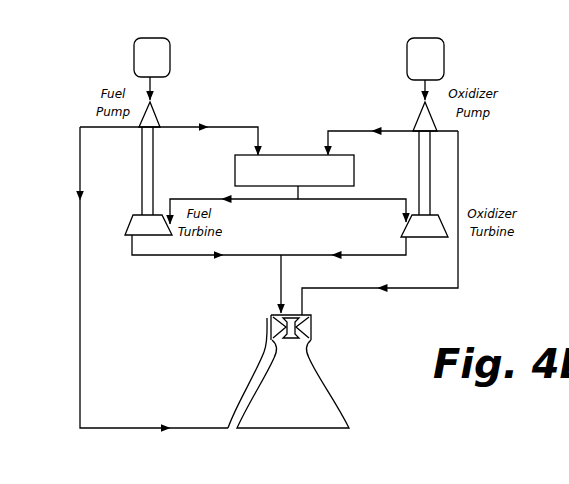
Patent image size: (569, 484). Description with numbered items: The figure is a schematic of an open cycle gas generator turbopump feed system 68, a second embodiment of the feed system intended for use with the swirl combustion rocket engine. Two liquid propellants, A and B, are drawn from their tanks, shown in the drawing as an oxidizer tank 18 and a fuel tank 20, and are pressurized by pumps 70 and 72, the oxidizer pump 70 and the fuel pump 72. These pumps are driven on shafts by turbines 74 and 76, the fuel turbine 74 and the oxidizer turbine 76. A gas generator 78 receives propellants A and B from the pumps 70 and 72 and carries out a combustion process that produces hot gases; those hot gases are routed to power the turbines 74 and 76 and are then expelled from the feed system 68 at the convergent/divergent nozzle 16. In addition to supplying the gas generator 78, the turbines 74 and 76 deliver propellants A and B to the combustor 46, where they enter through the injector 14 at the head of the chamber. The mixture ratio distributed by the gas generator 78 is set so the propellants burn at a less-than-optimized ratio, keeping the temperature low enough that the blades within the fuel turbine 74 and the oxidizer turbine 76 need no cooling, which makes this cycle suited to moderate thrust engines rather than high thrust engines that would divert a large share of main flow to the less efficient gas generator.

The injector 14 is at (312, 322).
The convergent/divergent nozzle 16 is at (333, 408).
The oxidizer tank 18 is at (404, 62).
The fuel tank 20 is at (171, 56).
The combustor 46 is at (331, 356).
The open cycle gas generator turbopump feed system 68 is at (477, 158).
The pump 70 is at (414, 124).
The pump 72 is at (159, 122).
The fuel turbine 74 is at (140, 222).
The oxidizer turbine 76 is at (427, 230).
The gas generator 78 is at (354, 166).